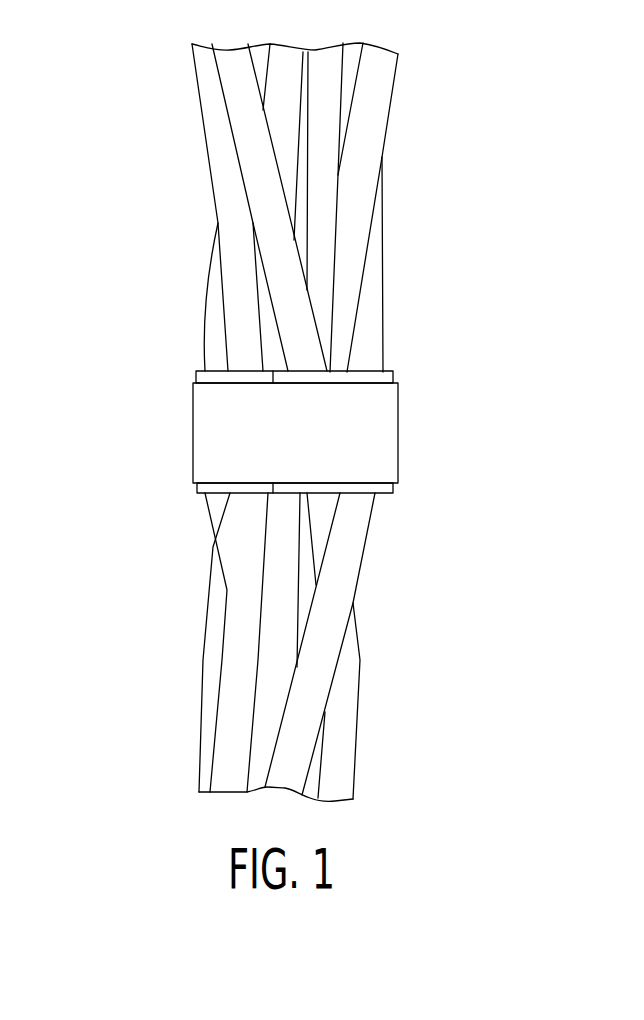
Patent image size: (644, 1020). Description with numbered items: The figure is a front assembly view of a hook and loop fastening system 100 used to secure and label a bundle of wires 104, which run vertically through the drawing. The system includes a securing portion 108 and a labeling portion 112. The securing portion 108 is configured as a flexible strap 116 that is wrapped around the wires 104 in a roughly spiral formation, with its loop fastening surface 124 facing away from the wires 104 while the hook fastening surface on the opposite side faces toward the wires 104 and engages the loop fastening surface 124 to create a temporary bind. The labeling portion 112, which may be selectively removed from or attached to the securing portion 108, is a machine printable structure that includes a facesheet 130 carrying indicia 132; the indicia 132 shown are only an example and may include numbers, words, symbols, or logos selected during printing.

The hook and loop fastening system 100 is at (125, 345).
The wires 104 is at (393, 110).
The securing portion 108 is at (368, 356).
The labeling portion 112 is at (420, 462).
The strap 116 is at (394, 380).
The loop fastening surface 124 is at (377, 487).
The facesheet 130 is at (202, 418).
The indicia 132 is at (291, 460).